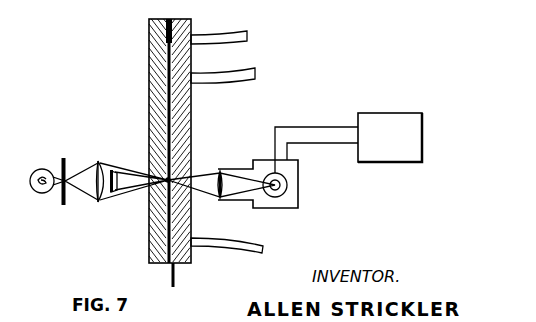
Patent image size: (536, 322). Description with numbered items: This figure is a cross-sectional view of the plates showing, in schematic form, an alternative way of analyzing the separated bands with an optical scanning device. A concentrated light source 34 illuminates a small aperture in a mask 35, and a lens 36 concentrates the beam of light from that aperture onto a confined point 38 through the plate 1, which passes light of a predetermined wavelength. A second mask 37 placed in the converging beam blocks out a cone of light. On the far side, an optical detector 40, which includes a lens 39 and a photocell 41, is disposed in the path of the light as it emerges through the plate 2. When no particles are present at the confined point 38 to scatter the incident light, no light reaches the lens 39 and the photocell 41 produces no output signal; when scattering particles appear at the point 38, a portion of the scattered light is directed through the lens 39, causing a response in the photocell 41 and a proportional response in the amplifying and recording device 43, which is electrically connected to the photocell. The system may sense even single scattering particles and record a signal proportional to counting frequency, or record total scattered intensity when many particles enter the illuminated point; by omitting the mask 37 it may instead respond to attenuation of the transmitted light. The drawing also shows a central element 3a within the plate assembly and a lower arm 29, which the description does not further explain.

The plate 1 is at (149, 30).
The plate 2 is at (191, 19).
The central shaft 3a is at (170, 129).
The lower arm 29 is at (256, 252).
The concentrated light source 34 is at (34, 171).
The mask 35 is at (66, 158).
The lens 36 is at (97, 203).
The mask 37 is at (113, 194).
The confined point 38 is at (174, 178).
The lens 39 is at (217, 198).
The optical detector 40 is at (301, 188).
The photocell 41 is at (284, 195).
The amplifying and recording device 43 is at (392, 113).